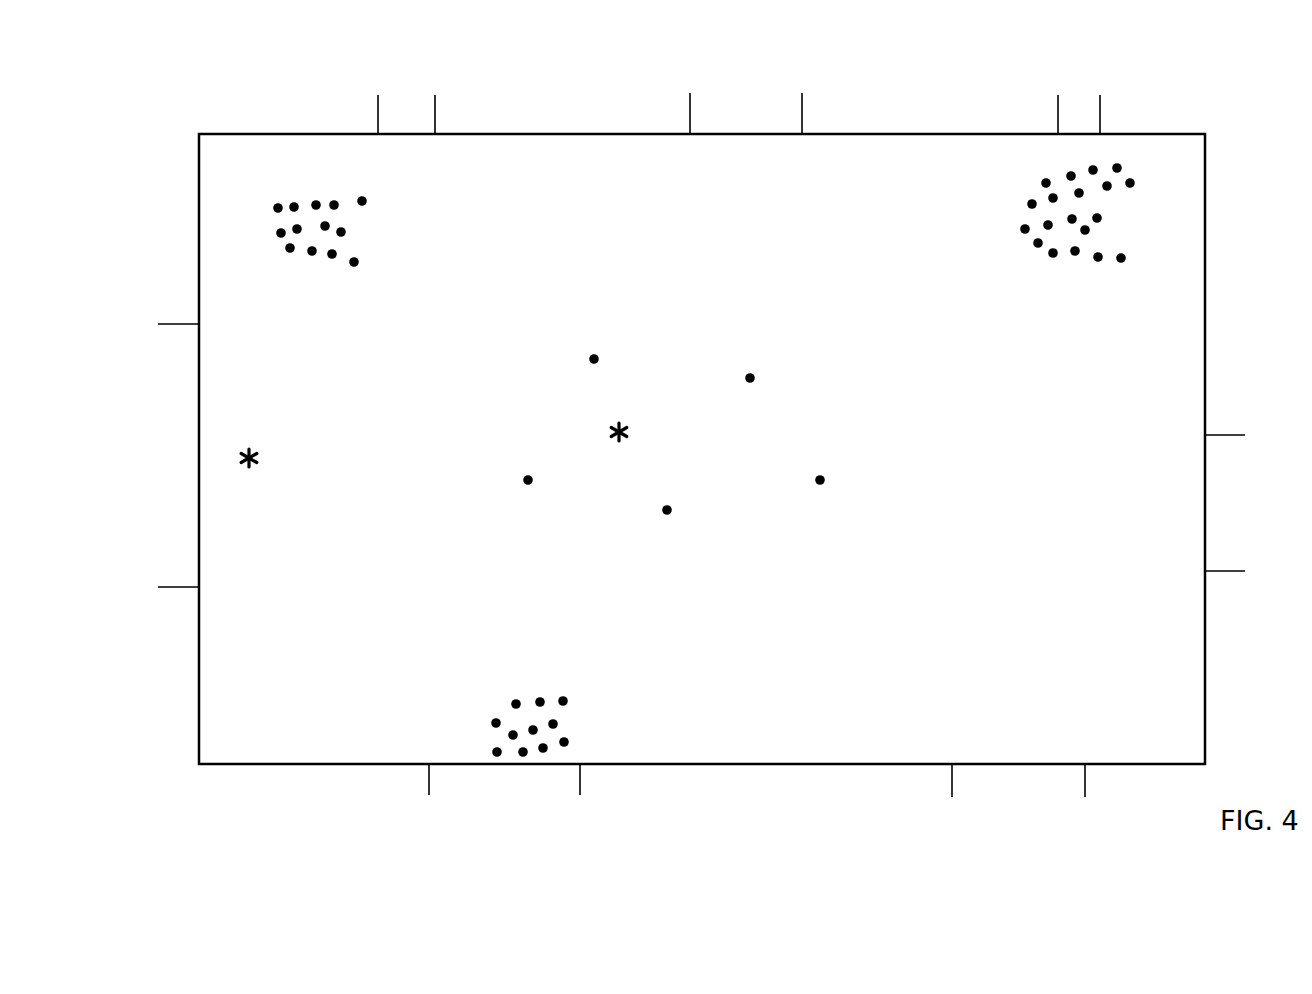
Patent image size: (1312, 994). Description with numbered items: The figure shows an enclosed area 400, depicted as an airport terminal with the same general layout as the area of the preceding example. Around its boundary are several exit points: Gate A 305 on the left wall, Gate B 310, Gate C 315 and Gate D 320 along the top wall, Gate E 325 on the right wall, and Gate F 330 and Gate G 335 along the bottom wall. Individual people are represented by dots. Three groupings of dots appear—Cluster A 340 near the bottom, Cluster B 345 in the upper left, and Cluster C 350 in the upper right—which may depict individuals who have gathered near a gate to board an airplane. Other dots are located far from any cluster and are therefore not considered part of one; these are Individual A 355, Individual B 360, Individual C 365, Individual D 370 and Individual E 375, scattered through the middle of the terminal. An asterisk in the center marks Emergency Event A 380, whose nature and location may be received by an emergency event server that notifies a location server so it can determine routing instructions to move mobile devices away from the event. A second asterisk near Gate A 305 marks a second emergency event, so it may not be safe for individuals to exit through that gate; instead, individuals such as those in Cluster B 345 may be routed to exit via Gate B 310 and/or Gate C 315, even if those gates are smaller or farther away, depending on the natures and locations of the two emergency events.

The Gate A 305 is at (160, 438).
The Gate B 310 is at (407, 65).
The Gate C 315 is at (746, 93).
The Gate D 320 is at (1082, 65).
The Gate E 325 is at (1243, 500).
The Gate F 330 is at (1018, 798).
The Gate G 335 is at (505, 805).
The Cluster A 340 is at (672, 716).
The Cluster B 345 is at (461, 233).
The Cluster C 350 is at (1163, 240).
The Individual A 355 is at (750, 376).
The Individual B 360 is at (820, 478).
The Individual C 365 is at (667, 508).
The Individual D 370 is at (528, 478).
The Individual E 375 is at (594, 357).
The Emergency Event A 380 is at (621, 416).
The enclosed area 400 is at (1233, 109).